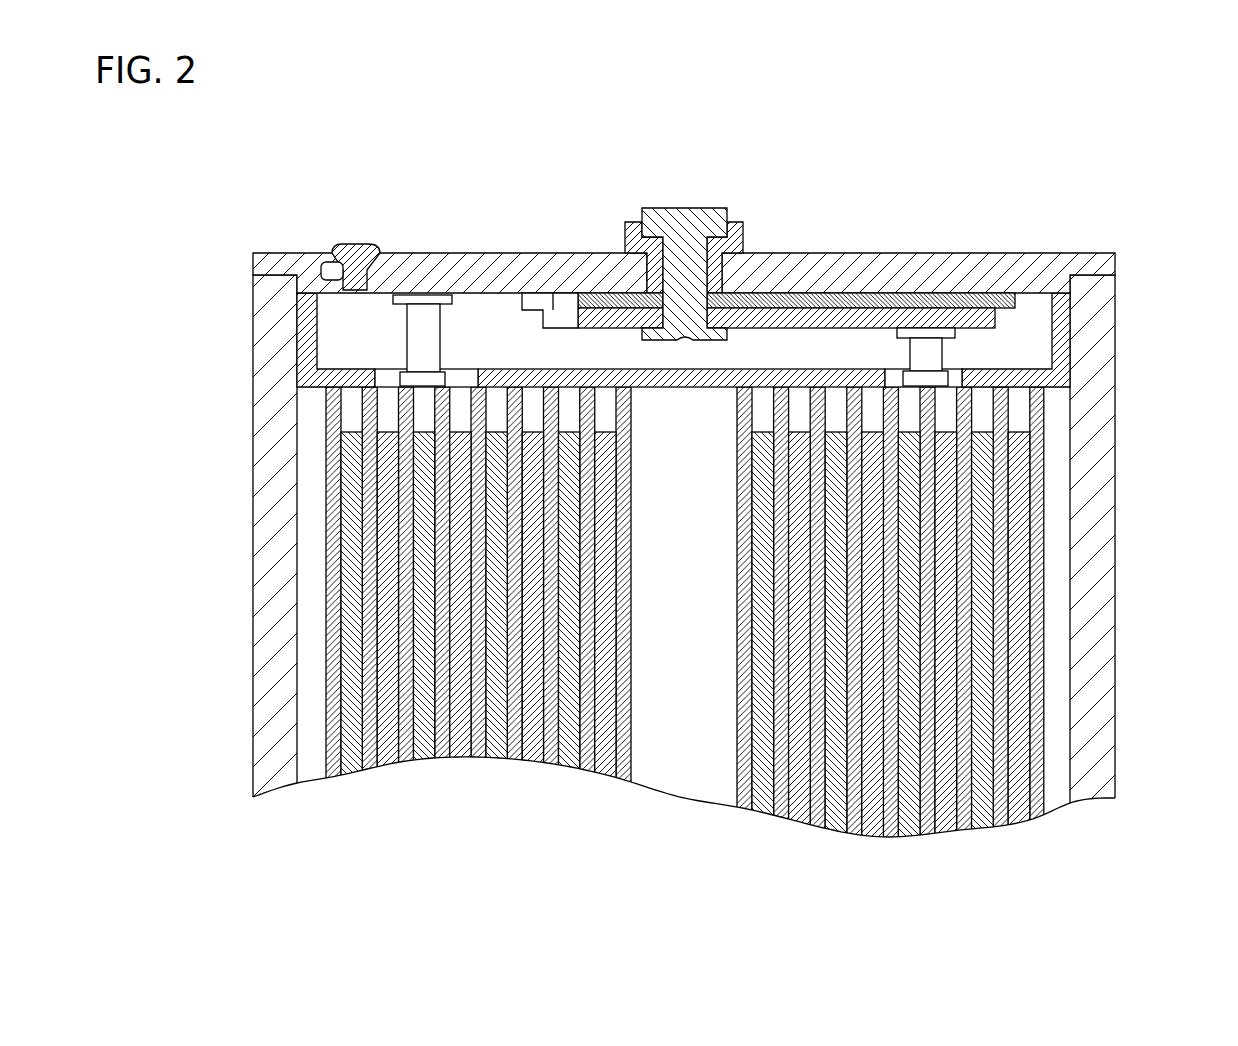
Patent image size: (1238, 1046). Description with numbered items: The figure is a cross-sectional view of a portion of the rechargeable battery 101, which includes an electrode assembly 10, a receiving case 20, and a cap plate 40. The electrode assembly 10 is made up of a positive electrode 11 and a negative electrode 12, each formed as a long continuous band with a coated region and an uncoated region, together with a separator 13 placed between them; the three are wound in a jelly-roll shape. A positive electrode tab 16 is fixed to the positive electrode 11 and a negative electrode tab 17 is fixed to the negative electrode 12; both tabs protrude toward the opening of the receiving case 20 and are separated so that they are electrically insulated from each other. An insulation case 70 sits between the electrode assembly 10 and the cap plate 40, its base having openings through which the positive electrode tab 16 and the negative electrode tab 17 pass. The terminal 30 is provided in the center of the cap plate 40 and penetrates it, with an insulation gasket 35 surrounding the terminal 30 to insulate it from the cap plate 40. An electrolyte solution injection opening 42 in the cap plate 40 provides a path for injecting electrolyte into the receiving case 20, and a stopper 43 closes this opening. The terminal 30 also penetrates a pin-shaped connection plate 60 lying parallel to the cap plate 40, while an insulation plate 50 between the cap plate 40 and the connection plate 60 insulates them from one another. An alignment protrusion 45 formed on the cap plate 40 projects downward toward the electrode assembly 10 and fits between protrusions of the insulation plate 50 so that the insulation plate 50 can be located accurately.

The rechargeable battery 101 is at (692, 128).
The electrode assembly 10 is at (768, 624).
The positive electrode 11 is at (1017, 628).
The negative electrode 12 is at (982, 692).
The separator 13 is at (1035, 578).
The positive electrode tab 16 is at (415, 343).
The negative electrode tab 17 is at (925, 352).
The receiving case 20 is at (1095, 422).
The terminal 30 is at (694, 222).
The insulation gasket 35 is at (738, 222).
The cap plate 40 is at (1055, 268).
The electrolyte solution injection opening 42 is at (328, 278).
The stopper 43 is at (346, 250).
The alignment protrusion 45 is at (566, 322).
The insulation plate 50 is at (1003, 303).
The connection plate 60 is at (965, 318).
The insulation case 70 is at (1058, 326).